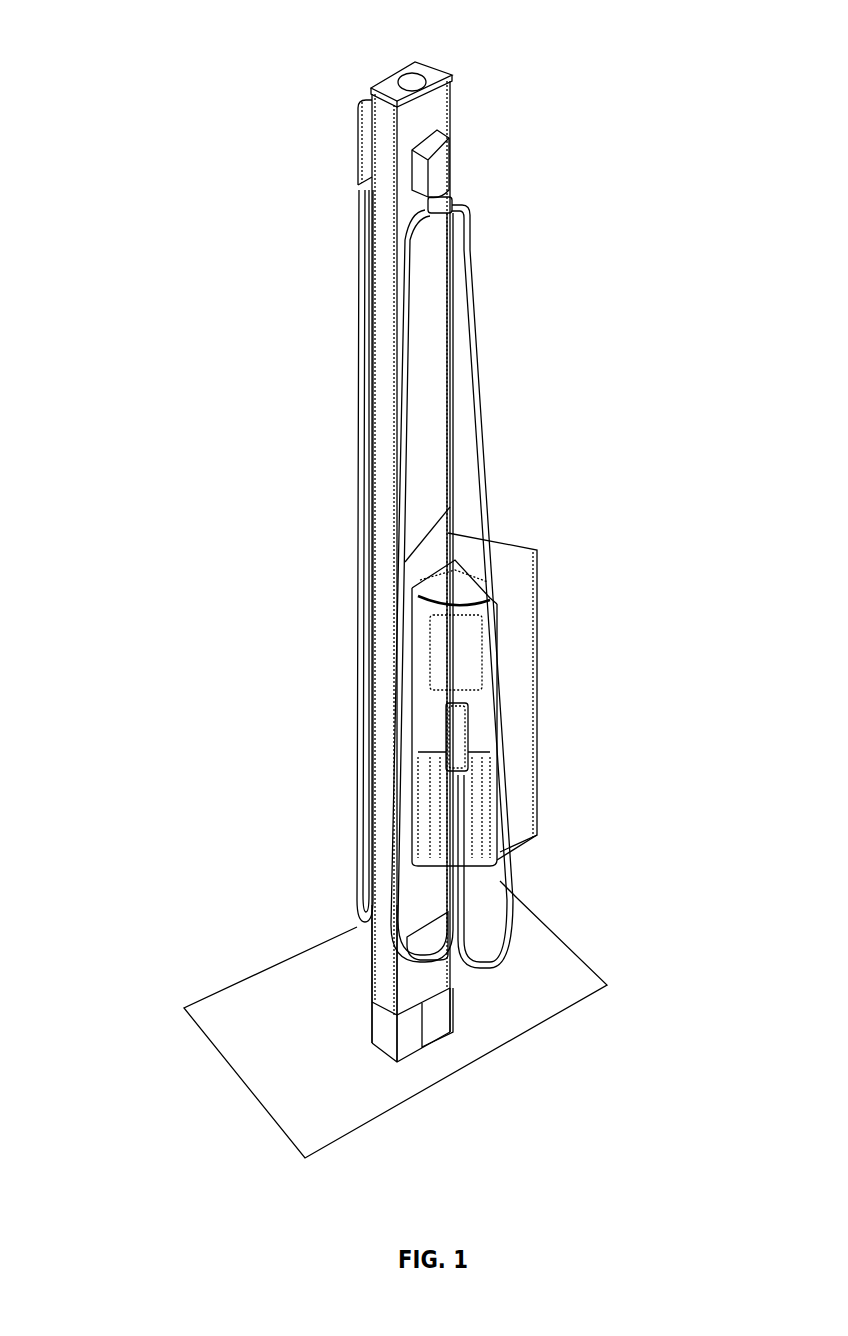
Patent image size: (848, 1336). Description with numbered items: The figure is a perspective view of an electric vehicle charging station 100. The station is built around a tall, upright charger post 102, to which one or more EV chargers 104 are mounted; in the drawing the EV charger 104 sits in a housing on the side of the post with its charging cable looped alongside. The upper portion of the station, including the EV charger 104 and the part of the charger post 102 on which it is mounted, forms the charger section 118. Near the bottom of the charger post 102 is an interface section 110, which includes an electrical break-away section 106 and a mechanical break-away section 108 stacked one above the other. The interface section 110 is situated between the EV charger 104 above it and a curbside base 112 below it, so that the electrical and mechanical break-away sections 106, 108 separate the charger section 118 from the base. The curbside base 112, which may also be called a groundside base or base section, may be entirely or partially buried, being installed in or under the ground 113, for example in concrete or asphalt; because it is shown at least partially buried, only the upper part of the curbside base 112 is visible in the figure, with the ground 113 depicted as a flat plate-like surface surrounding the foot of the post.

The EV charging station 100 is at (268, 139).
The charger post 102 is at (390, 352).
The EV charger 104 is at (536, 745).
The electrical break-away section 106 is at (318, 970).
The mechanical break-away section 108 is at (318, 1024).
The interface section 110 is at (482, 978).
The curbside base 112 is at (432, 1040).
The ground 113 is at (522, 1018).
The charger section 118 is at (283, 728).